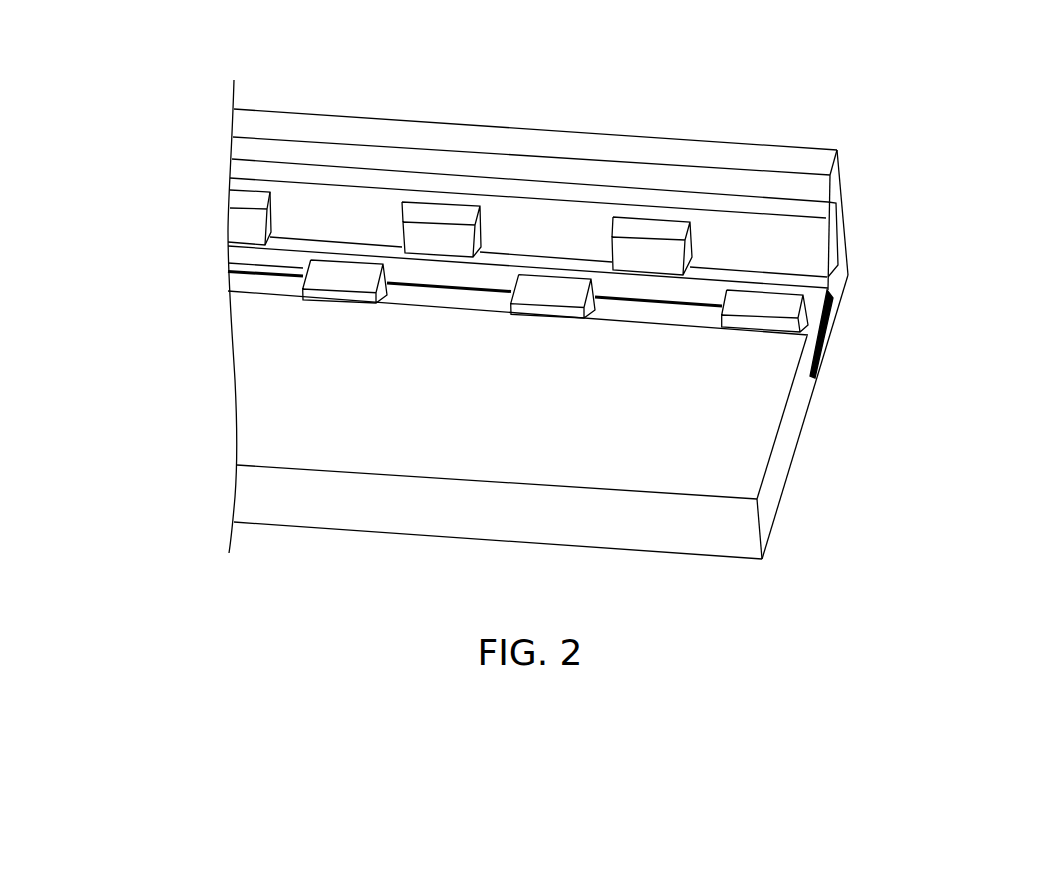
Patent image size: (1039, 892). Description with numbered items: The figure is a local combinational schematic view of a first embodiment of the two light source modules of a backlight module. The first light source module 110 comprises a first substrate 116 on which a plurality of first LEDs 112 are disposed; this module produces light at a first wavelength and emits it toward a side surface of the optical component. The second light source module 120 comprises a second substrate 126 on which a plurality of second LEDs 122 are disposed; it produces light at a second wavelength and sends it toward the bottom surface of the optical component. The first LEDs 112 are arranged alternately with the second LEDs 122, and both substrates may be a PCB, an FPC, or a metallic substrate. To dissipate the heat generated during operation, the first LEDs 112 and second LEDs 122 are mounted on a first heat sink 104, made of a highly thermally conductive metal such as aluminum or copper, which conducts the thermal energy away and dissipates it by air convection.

The first heat sink 104 is at (778, 471).
The first light source module 110 is at (479, 63).
The first LEDs 112 is at (449, 222).
The first substrate 116 is at (540, 222).
The second light source module 120 is at (952, 315).
The second LEDs 122 is at (325, 272).
The second substrate 126 is at (815, 343).